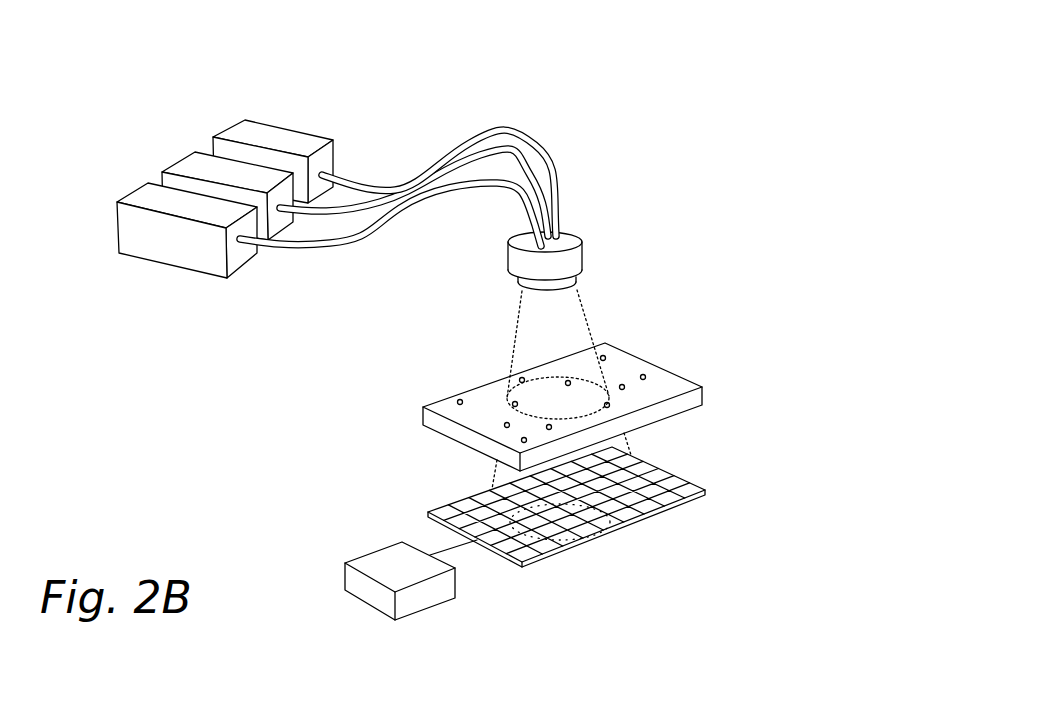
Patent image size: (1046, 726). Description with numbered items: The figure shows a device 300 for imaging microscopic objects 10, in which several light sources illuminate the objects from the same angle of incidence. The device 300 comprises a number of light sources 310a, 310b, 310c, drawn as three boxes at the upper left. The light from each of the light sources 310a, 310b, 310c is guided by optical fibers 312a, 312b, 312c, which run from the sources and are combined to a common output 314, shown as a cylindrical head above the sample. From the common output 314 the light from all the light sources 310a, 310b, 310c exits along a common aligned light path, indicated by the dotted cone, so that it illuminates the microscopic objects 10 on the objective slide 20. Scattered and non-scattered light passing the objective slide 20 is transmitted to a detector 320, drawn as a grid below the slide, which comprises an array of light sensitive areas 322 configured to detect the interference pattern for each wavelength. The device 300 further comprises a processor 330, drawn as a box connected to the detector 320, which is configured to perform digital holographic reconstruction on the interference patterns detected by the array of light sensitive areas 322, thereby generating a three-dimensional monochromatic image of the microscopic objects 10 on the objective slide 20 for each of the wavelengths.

The device for imaging microscopic objects 300 is at (714, 155).
The light source 310a is at (165, 238).
The light source 310b is at (200, 166).
The light source 310c is at (243, 130).
The optical fiber 312a is at (377, 226).
The optical fiber 312b is at (390, 196).
The optical fiber 312c is at (478, 132).
The common output 314 is at (562, 288).
The microscopic objects 10 is at (568, 383).
The objective slide 20 is at (660, 412).
The detector 320 is at (604, 529).
The array of light sensitive areas 322 is at (577, 538).
The processor 330 is at (428, 597).